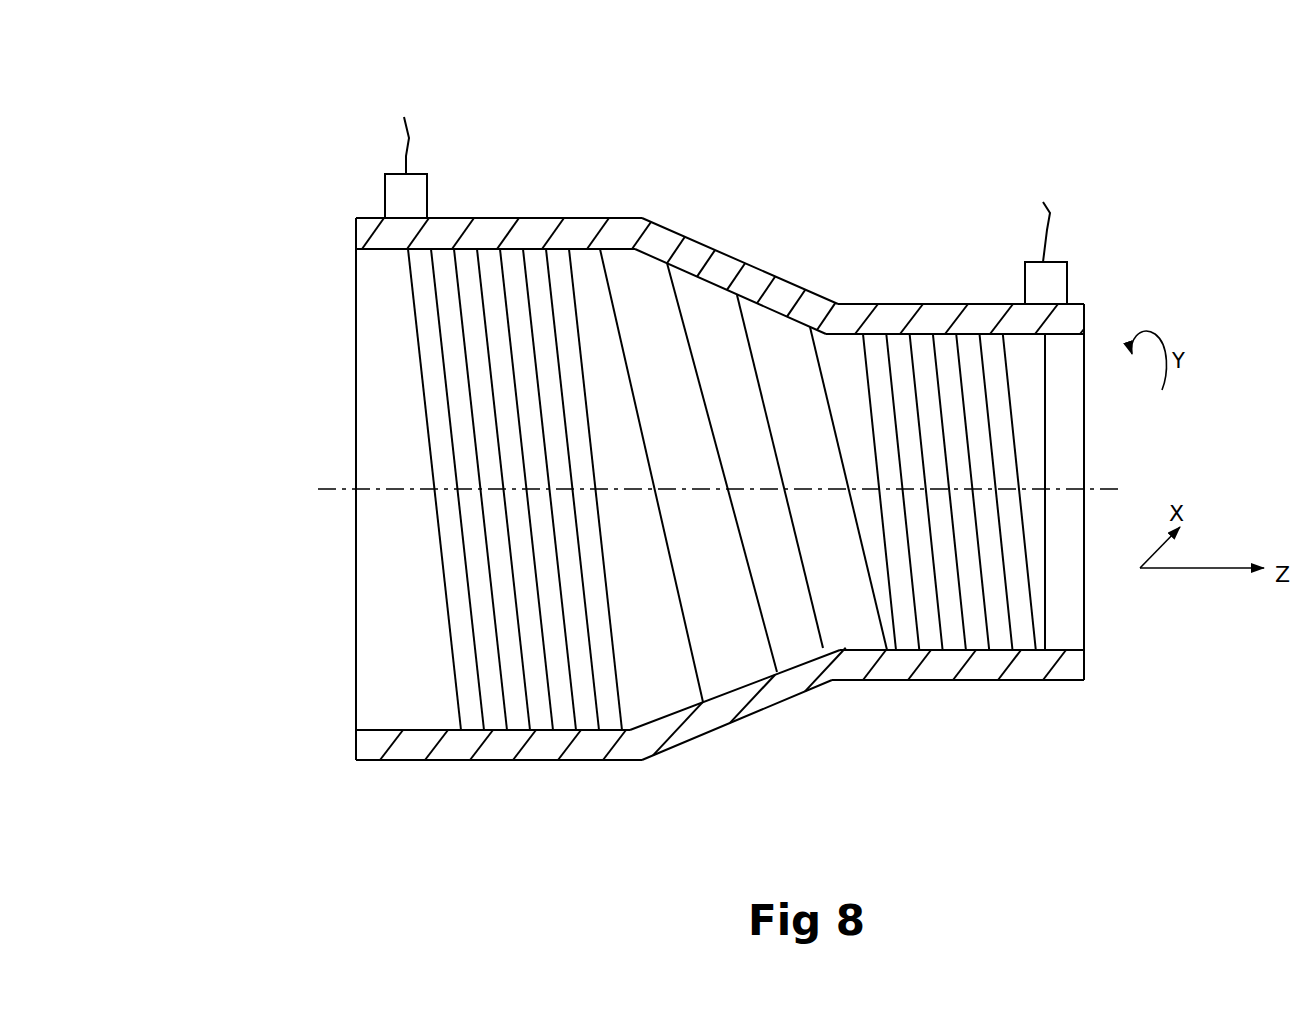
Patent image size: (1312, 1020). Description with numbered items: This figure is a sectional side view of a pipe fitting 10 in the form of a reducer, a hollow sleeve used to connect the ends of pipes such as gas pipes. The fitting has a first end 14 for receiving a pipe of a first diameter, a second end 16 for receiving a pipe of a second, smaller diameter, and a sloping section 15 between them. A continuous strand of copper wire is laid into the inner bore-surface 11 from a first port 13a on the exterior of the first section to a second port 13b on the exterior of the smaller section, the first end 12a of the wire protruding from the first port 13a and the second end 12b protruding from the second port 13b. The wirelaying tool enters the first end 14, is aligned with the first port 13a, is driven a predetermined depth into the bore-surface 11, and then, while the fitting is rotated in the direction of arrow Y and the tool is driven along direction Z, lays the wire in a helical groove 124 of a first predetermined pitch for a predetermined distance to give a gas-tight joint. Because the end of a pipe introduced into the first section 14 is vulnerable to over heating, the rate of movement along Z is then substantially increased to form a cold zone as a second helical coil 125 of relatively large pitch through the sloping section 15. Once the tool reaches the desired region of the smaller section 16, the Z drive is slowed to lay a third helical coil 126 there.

The pipe fitting 10 is at (1080, 673).
The inner bore-surface 11 is at (379, 726).
The first end of wire 12a is at (418, 126).
The second end of wire 12b is at (1052, 208).
The first port 13a is at (400, 192).
The second port 13b is at (1050, 283).
The first end 14 is at (460, 752).
The sloping section 15 is at (717, 712).
The second end 16 is at (941, 672).
The helical groove 124 is at (576, 319).
The second helical coil 125 is at (680, 306).
The third helical coil 126 is at (876, 424).